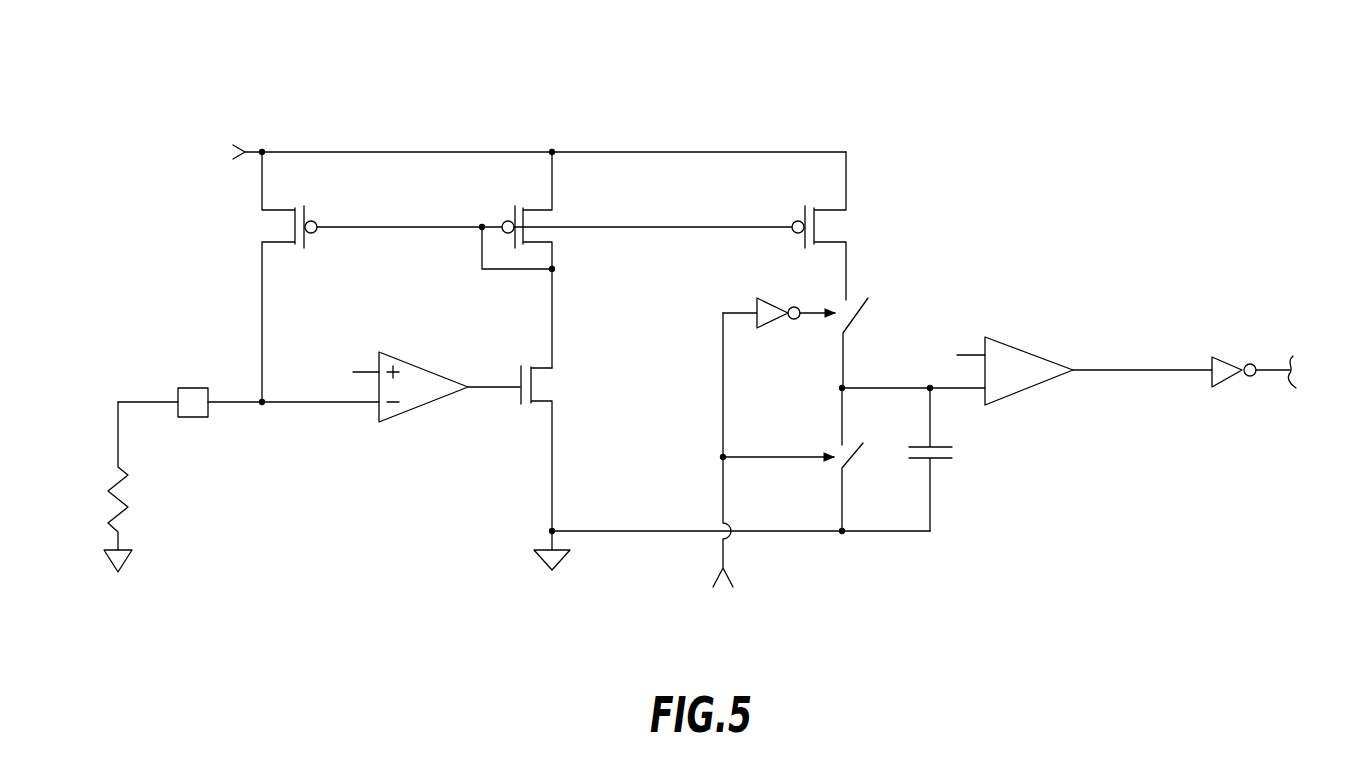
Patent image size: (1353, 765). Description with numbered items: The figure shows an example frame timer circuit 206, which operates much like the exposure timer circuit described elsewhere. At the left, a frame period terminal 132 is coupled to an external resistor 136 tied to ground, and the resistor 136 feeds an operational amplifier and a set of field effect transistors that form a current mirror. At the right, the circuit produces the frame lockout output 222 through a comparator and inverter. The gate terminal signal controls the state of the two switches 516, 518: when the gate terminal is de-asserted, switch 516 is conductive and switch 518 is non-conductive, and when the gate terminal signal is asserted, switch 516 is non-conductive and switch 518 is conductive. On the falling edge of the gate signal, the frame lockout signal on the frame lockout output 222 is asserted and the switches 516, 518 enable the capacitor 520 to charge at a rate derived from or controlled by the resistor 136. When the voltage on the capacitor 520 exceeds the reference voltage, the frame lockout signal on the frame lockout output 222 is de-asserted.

The frame timer circuit 206 is at (228, 70).
The frame period terminal 132 is at (186, 388).
The external resistor 136 is at (134, 500).
The switch 516 is at (860, 293).
The switch 518 is at (860, 474).
The capacitor 520 is at (942, 459).
The frame lockout output 222 is at (1267, 368).